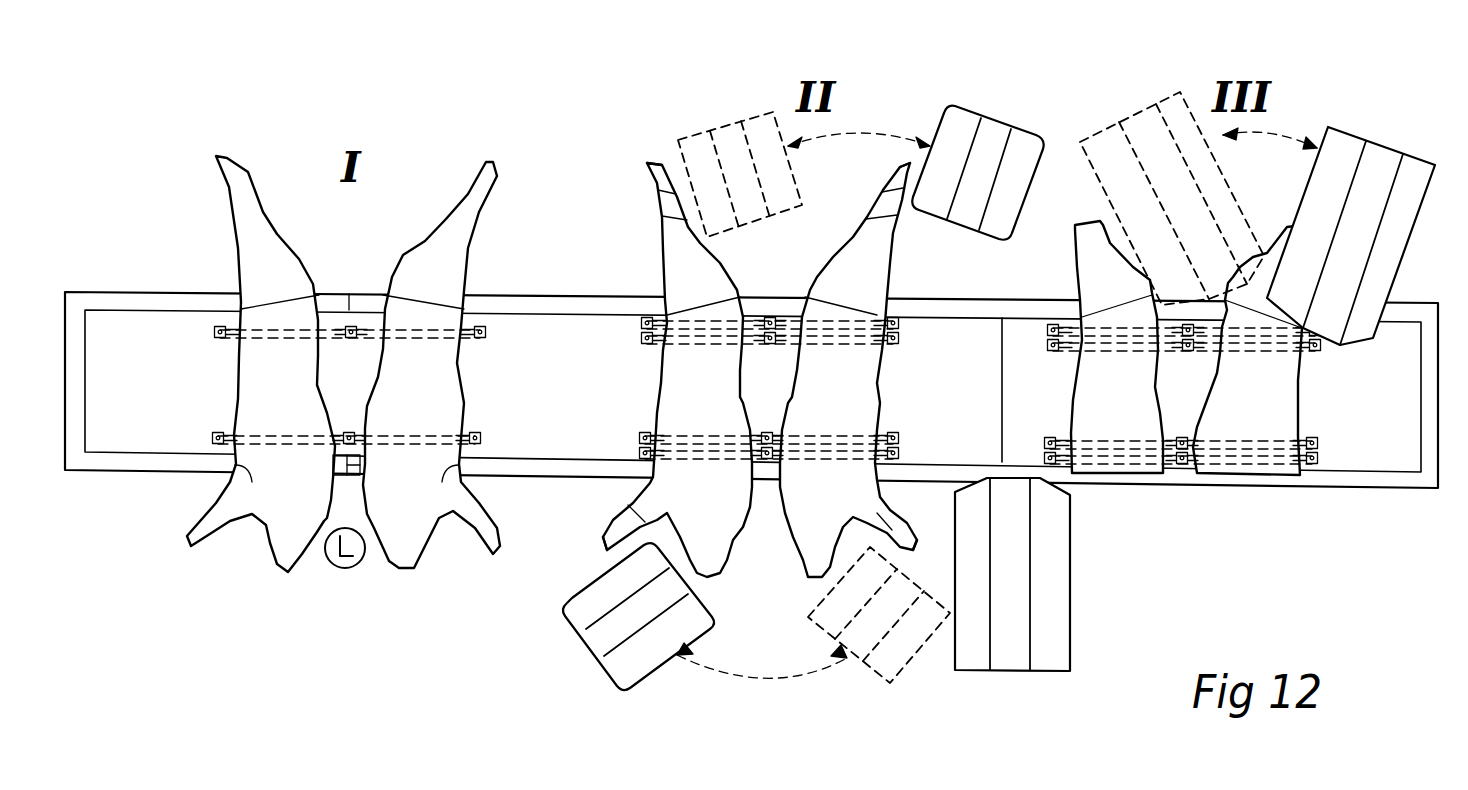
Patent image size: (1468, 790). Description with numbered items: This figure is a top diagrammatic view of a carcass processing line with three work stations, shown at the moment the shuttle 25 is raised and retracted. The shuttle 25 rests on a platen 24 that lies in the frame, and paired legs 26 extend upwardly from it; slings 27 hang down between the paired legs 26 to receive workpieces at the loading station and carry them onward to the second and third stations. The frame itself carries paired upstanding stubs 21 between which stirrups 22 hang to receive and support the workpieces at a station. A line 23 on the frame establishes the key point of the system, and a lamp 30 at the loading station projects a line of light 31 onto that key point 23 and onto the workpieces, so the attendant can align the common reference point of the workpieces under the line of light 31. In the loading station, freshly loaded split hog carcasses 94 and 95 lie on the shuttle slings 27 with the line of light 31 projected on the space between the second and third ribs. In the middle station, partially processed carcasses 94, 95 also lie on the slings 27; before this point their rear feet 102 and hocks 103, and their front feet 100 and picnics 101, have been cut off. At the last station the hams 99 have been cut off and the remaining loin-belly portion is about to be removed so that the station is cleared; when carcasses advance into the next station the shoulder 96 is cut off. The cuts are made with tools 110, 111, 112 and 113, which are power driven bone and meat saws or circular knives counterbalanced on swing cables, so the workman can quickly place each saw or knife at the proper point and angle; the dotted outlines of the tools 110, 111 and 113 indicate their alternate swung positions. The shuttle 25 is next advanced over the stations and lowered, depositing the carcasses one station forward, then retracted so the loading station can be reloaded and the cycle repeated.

The upstanding stubs 21 is at (1045, 456).
The stirrups 22 is at (1250, 472).
The key point line 23 is at (349, 294).
The platen 24 is at (1389, 421).
The shuttle 25 is at (975, 419).
The paired legs 26 is at (487, 332).
The slings 27 is at (370, 340).
The lamp 30 is at (345, 568).
The line of light 31 is at (240, 480).
The split hog carcass 94 is at (447, 385).
The split hog carcass 95 is at (255, 360).
The shoulder 96 is at (721, 530).
The hams 99 is at (1080, 262).
The front feet 100 is at (604, 545).
The picnics 101 is at (640, 503).
The rear feet 102 is at (648, 165).
The hocks 103 is at (658, 208).
The tool 110 is at (591, 640).
The tool 111 is at (742, 112).
The tool 112 is at (1005, 672).
The tool 113 is at (1157, 102).